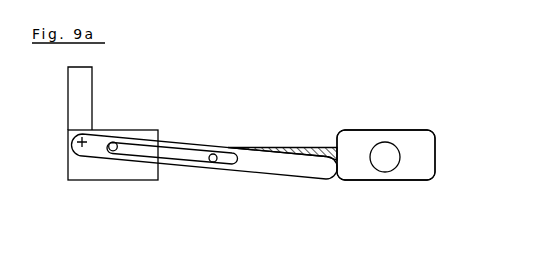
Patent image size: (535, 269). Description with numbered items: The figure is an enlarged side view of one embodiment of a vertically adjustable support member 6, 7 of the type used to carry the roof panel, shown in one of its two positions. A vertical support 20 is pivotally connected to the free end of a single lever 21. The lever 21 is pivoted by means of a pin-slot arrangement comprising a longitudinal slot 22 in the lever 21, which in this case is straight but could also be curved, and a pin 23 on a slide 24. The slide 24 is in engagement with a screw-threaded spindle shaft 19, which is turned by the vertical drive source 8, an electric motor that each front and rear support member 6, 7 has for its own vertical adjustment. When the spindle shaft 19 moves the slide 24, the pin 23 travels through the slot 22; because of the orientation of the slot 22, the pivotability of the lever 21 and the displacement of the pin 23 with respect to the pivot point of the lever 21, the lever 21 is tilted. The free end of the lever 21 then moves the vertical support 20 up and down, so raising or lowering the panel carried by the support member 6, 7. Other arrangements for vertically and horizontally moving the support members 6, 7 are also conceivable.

The front support member 6 is at (294, 66).
The rear support member 7 is at (386, 155).
The vertical drive source 8 is at (415, 140).
The screw-threaded spindle shaft 19 is at (327, 146).
The vertical support 20 is at (82, 95).
The lever 21 is at (318, 175).
The longitudinal slot 22 is at (216, 163).
The pin 23 is at (112, 151).
The slide 24 is at (88, 172).